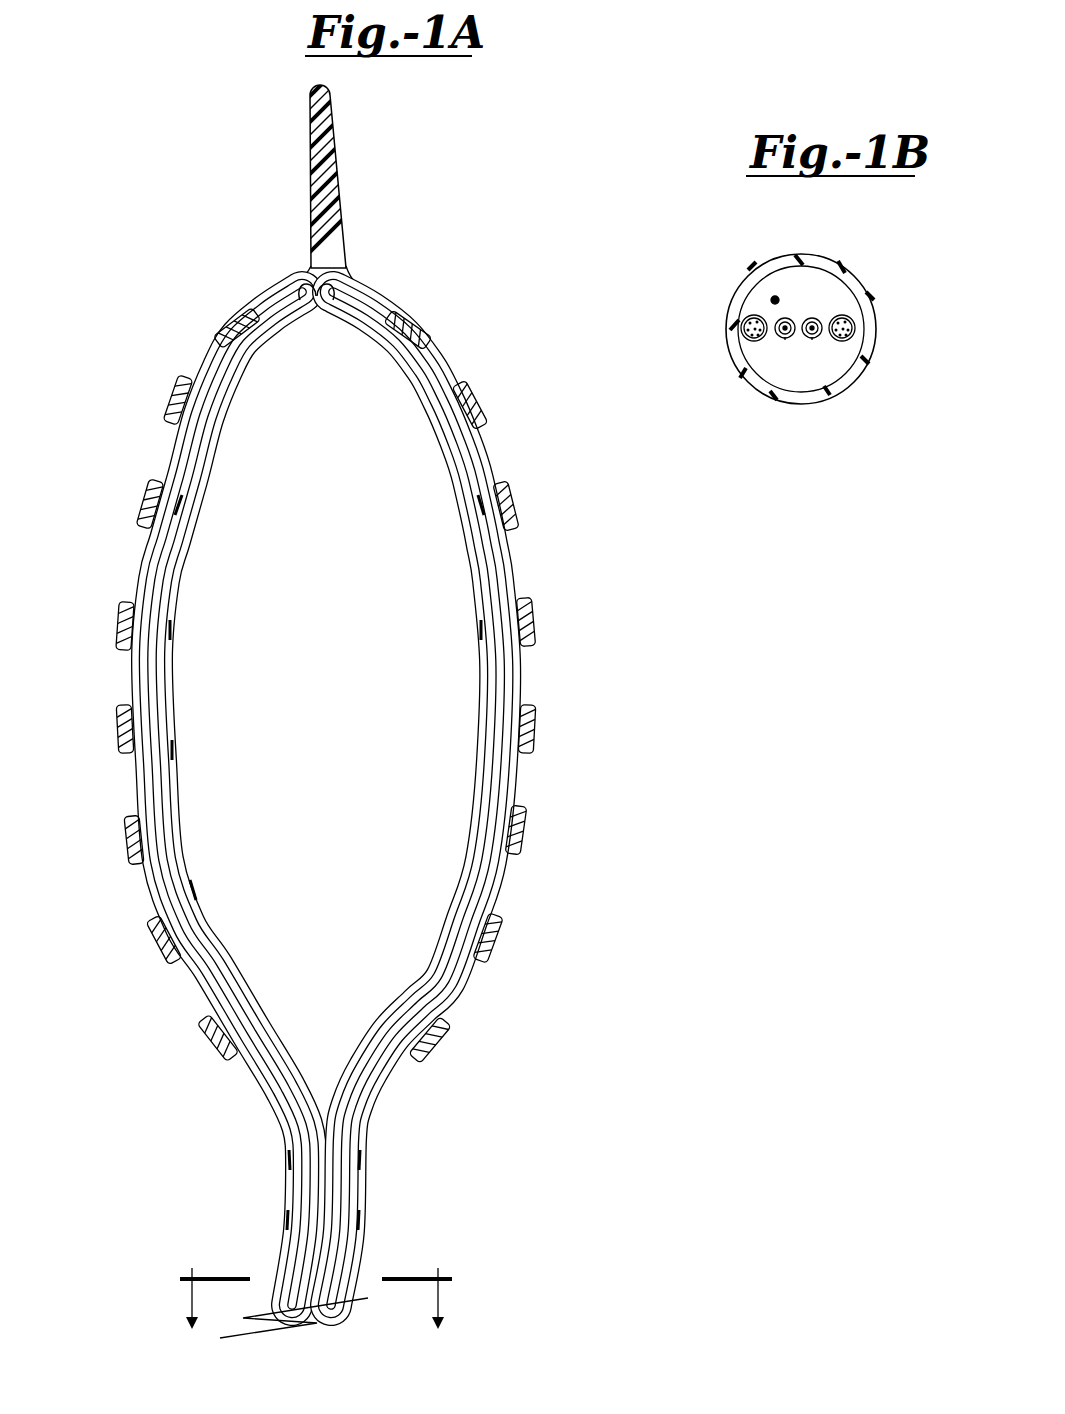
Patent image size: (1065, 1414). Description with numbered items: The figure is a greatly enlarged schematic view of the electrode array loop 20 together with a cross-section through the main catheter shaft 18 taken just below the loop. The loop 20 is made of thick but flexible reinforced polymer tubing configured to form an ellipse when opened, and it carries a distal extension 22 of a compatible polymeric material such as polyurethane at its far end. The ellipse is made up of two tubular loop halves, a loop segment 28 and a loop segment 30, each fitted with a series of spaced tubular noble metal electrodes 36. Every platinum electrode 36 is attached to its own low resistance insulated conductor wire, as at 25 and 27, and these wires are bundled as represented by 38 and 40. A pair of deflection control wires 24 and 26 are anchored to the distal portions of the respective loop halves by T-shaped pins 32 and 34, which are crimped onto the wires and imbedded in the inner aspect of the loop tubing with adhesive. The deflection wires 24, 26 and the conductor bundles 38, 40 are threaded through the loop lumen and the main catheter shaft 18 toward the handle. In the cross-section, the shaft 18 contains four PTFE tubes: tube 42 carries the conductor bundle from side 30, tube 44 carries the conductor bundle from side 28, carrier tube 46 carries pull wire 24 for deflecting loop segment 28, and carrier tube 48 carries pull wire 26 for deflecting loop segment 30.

In FIG. 1A, the main catheter shaft 18 is at (358, 1260).
In FIG. 1A, the loop 20 is at (262, 272).
In FIG. 1A, the distal extension 22 is at (345, 172).
In FIG. 1A, the deflection control wire 24 is at (470, 532).
In FIG. 1B, the deflection control wire 24 is at (812, 337).
In FIG. 1A, the insulated conductor wire 25 is at (217, 368).
In FIG. 1A, the deflection control wire 26 is at (175, 572).
In FIG. 1B, the deflection control wire 26 is at (785, 337).
In FIG. 1A, the insulated conductor wire 27 is at (440, 378).
In FIG. 1A, the tubular elliptical loop half 28 is at (395, 788).
In FIG. 1A, the tubular elliptical loop half 30 is at (172, 758).
In FIG. 1A, the T-shaped pin 32 is at (285, 328).
In FIG. 1A, the T-shaped pin 34 is at (350, 330).
In FIG. 1A, the tubular noble metal electrodes 36 is at (512, 490).
In FIG. 1A, the bundle of conductor wires 38 is at (298, 1230).
In FIG. 1B, the bundle of conductor wires 38 is at (752, 333).
In FIG. 1A, the bundle of conductor wires 40 is at (348, 1228).
In FIG. 1B, the bundle of conductor wires 40 is at (847, 313).
In FIG. 1B, the PTFE tube 42 is at (757, 337).
In FIG. 1B, the PTFE tube 44 is at (860, 343).
In FIG. 1A, the carrier tube 46 is at (362, 1170).
In FIG. 1B, the carrier tube 46 is at (812, 317).
In FIG. 1A, the carrier tube 48 is at (300, 1163).
In FIG. 1B, the carrier tube 48 is at (785, 318).